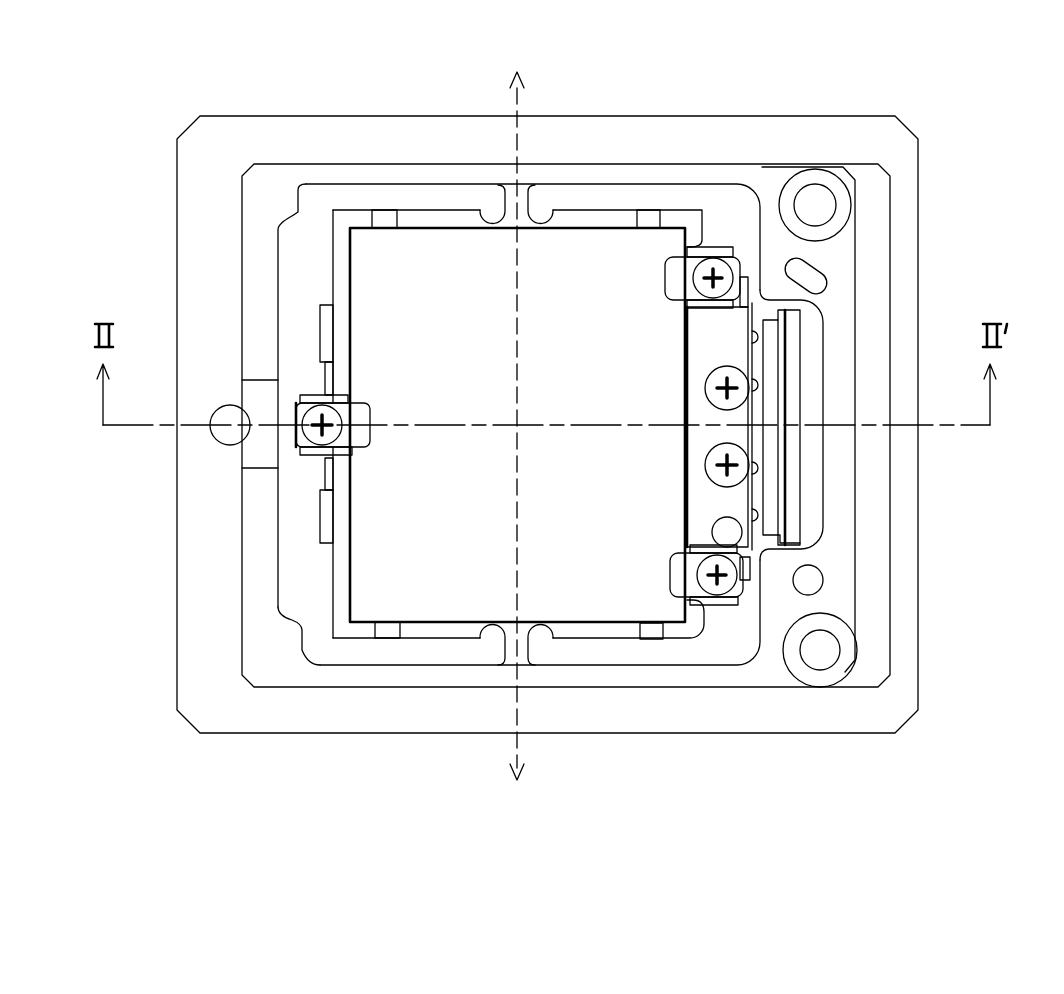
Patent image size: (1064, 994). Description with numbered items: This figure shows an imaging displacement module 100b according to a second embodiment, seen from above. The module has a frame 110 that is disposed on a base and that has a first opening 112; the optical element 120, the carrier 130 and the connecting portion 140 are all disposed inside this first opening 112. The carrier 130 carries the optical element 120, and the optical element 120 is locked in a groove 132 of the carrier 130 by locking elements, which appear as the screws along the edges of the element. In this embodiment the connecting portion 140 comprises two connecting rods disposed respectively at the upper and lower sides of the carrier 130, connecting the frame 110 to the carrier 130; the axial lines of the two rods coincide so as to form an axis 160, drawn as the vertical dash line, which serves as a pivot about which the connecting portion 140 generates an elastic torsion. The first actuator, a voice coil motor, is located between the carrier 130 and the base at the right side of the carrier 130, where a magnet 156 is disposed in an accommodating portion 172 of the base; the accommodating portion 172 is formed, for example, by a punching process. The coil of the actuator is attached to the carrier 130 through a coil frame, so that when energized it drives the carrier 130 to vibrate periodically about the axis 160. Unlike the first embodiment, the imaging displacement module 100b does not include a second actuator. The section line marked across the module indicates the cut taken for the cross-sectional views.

The imaging displacement module 100b is at (968, 797).
The frame 110 is at (628, 710).
The first opening 112 is at (733, 670).
The optical element 120 is at (442, 587).
The carrier 130 is at (590, 633).
The groove 132 is at (341, 254).
The connecting portion 140 is at (510, 187).
The magnet 156 is at (770, 333).
The axis 160 is at (520, 92).
The accommodating portion 172 is at (793, 333).